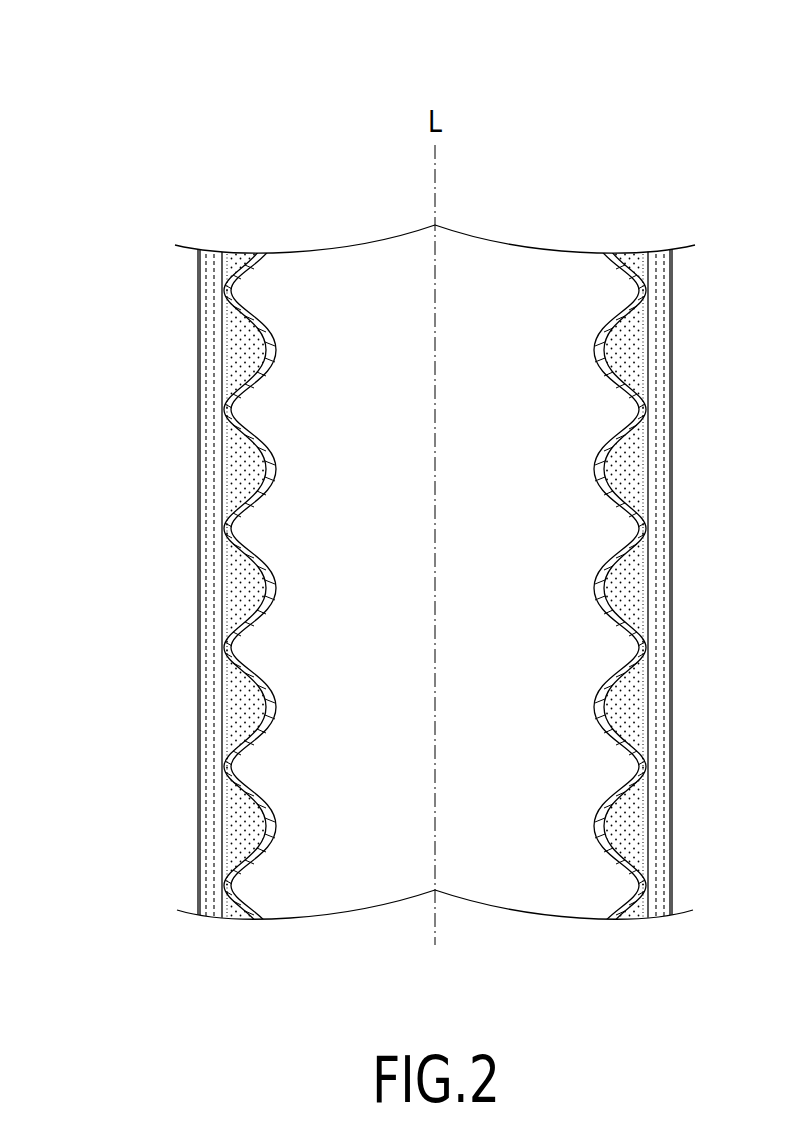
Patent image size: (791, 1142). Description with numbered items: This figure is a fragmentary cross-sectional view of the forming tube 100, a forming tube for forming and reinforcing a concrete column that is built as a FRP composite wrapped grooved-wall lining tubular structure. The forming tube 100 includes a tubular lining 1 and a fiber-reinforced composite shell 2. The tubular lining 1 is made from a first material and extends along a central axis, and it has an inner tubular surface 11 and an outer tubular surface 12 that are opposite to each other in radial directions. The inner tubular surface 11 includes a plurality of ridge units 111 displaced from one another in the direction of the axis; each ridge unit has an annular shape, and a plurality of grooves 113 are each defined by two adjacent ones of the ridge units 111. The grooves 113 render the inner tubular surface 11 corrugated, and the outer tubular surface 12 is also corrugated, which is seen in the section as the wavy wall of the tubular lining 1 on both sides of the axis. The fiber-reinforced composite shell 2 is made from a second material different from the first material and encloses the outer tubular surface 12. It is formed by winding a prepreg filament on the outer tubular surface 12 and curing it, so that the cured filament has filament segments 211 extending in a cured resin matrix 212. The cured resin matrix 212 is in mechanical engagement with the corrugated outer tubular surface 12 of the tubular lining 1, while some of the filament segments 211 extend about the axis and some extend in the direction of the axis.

The forming tube 100 is at (122, 126).
The tubular lining 1 is at (238, 272).
The inner tubular surface 11 is at (242, 278).
The outer tubular surface 12 is at (238, 272).
The ridge units 111 is at (597, 348).
The grooves 113 is at (633, 403).
The fiber-reinforced composite shell 2 is at (182, 507).
The filament segments 211 is at (216, 313).
The cured resin matrix 212 is at (248, 355).